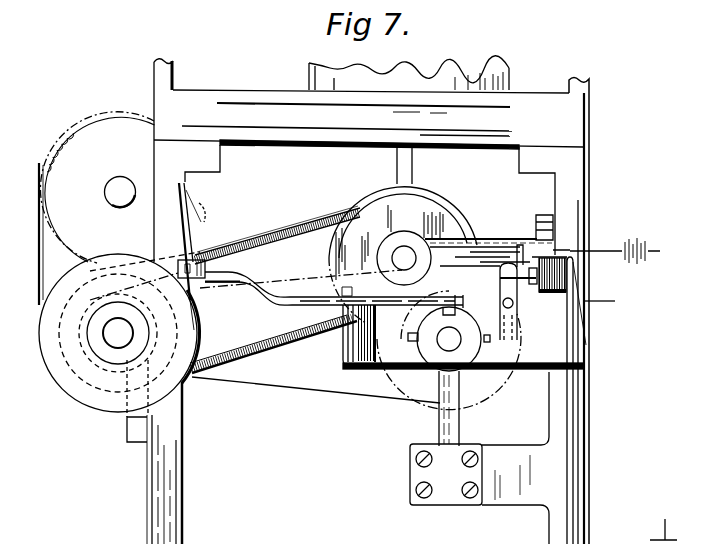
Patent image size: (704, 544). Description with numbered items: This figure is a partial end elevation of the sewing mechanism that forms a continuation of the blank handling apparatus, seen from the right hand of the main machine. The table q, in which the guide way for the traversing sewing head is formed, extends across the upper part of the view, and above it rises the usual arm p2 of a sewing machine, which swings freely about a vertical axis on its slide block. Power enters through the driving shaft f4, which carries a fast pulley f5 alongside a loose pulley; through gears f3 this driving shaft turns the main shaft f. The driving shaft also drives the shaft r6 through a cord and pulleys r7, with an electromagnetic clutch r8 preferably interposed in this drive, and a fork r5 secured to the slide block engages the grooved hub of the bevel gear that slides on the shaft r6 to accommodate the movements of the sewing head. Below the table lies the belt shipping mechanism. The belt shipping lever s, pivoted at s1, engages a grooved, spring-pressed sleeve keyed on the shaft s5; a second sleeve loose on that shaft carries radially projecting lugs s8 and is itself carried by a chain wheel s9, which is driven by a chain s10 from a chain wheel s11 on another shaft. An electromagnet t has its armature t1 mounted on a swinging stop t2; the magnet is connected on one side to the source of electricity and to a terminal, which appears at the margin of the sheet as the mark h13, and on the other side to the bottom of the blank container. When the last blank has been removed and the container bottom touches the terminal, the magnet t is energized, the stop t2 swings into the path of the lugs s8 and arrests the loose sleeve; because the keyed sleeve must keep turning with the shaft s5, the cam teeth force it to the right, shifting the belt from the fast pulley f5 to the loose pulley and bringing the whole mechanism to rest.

The table q is at (367, 119).
The arm of sewing machine p2 is at (509, 74).
The gears f3 is at (72, 135).
The main shaft f is at (119, 177).
The fast pulley f5 is at (57, 369).
The driving shaft f4 is at (113, 341).
The chain wheel s11 is at (197, 340).
The cord and pulleys r7 is at (318, 222).
The fork r5 is at (404, 167).
The electromagnetic clutch r8 is at (461, 214).
The shaft r6 is at (405, 257).
The belt shipping lever s is at (280, 302).
The pivot s1 is at (347, 308).
The shaft s5 is at (382, 369).
The radially projecting lugs s8 is at (488, 314).
The chain wheel s9 is at (496, 395).
The chain s10 is at (285, 386).
The armature t1 is at (524, 262).
The electromagnet t is at (568, 254).
The swinging stop t2 is at (517, 290).
The part h13 is at (613, 535).